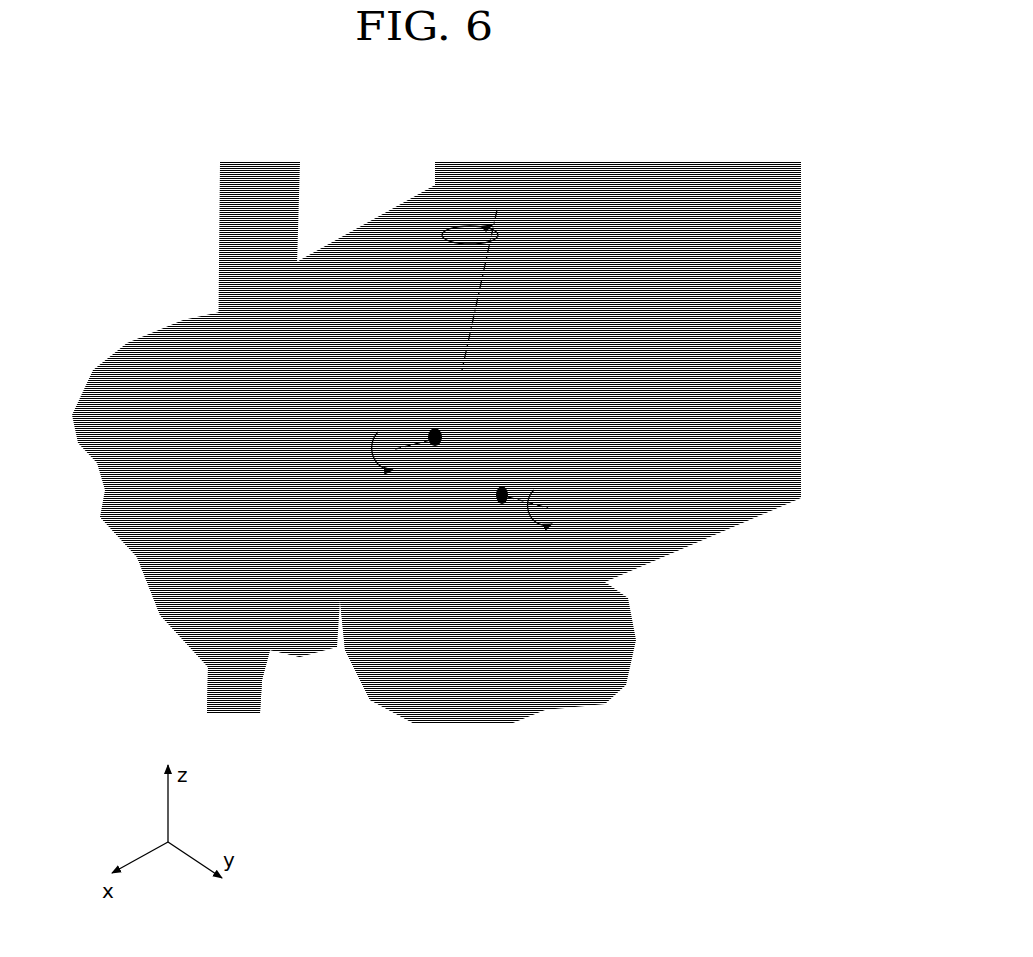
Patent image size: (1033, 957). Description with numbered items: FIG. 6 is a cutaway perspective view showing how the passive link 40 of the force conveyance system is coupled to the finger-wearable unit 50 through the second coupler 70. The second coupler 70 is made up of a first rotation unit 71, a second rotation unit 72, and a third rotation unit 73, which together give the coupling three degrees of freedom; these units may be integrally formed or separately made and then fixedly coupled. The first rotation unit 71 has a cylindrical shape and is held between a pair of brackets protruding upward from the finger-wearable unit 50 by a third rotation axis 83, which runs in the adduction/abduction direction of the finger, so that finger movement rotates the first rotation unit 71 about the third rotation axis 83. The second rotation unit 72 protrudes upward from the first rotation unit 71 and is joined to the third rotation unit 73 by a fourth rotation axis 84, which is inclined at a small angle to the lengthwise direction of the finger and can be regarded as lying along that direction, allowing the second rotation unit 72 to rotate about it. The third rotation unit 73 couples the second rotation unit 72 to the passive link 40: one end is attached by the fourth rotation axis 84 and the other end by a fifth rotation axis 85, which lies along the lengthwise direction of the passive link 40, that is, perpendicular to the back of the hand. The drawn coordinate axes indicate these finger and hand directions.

The passive link 40 is at (495, 203).
The finger-wearable unit 50 is at (158, 632).
The second coupler 70 is at (203, 370).
The first rotation unit 71 is at (438, 490).
The second rotation unit 72 is at (483, 432).
The third rotation unit 73 is at (488, 395).
The third rotation axis 83 is at (502, 495).
The fourth rotation axis 84 is at (435, 437).
The fifth rotation axis 85 is at (450, 348).